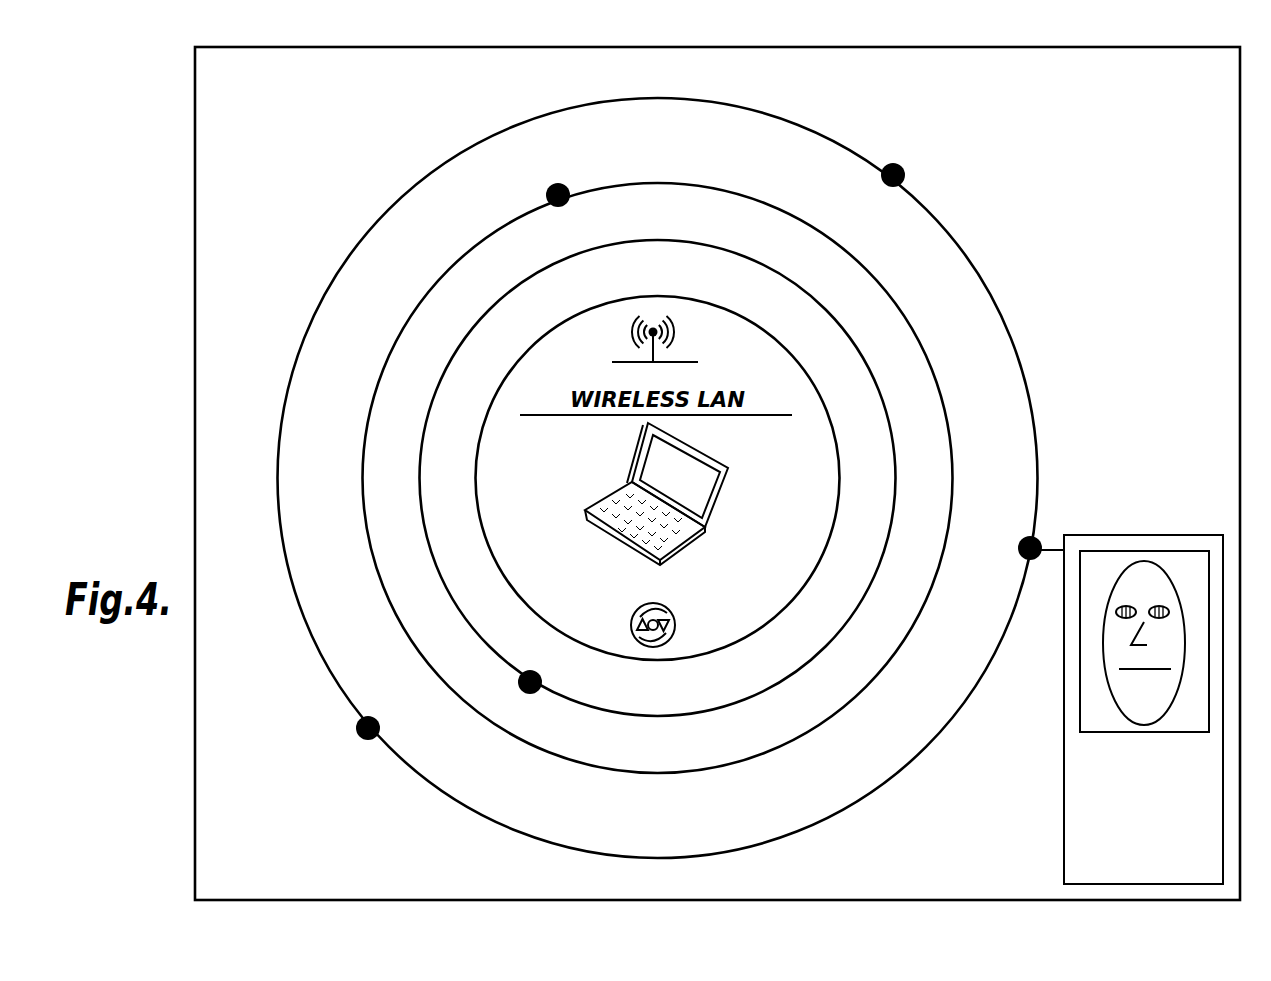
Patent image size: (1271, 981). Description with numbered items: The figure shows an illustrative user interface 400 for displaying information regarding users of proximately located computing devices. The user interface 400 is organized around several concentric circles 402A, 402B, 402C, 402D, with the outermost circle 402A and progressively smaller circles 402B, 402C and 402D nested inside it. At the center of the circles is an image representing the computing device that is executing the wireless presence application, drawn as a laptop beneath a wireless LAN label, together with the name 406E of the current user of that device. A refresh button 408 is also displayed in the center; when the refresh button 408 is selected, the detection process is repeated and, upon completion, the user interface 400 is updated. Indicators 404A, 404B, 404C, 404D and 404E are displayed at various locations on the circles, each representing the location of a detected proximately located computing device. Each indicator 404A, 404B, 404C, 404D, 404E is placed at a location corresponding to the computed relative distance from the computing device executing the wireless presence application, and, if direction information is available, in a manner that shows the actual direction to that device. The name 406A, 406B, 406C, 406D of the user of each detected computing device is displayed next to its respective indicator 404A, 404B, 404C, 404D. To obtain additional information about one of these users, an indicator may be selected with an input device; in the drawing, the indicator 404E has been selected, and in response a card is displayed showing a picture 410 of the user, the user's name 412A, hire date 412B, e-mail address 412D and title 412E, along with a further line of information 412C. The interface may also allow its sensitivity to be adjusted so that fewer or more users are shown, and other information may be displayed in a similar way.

The user interface 400 is at (166, 151).
The concentric circle 402A is at (1003, 312).
The concentric circle 402B is at (927, 350).
The concentric circle 402C is at (892, 430).
The concentric circle 402D is at (827, 420).
The indicator 404A is at (903, 177).
The indicator 404B is at (570, 195).
The indicator 404C is at (538, 692).
The indicator 404D is at (360, 728).
The indicator 404E is at (1032, 547).
The name 406A is at (1060, 150).
The name 406B is at (583, 163).
The name 406C is at (713, 675).
The name 406D is at (293, 767).
The name 406E is at (715, 573).
The refresh button 408 is at (632, 623).
The picture 410 is at (1176, 554).
The name 412A is at (1064, 746).
The hire date 412B is at (1064, 771).
The email address field 412C is at (1064, 794).
The e-mail address 412D is at (1064, 817).
The title 412E is at (1064, 855).